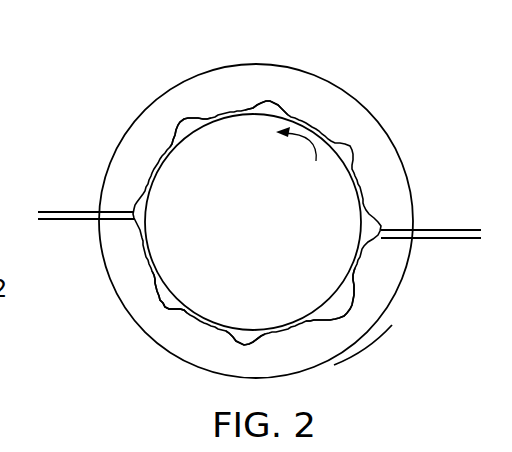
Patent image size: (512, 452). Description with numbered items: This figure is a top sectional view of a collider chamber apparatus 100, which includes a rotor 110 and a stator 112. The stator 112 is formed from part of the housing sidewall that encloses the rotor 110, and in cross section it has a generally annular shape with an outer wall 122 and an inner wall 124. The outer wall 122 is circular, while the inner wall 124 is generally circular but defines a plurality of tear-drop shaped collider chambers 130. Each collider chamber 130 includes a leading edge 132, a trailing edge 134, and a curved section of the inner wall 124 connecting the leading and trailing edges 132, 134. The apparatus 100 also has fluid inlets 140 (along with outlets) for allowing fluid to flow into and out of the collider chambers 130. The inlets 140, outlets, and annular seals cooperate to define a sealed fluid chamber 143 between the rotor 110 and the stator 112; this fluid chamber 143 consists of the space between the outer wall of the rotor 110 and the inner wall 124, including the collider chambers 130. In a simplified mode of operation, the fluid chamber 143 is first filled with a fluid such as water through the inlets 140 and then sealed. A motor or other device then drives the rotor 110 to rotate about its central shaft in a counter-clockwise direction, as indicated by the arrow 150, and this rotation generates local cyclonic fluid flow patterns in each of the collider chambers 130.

The collider chamber apparatus 100 is at (143, 362).
The rotor 110 is at (210, 326).
The stator 112 is at (364, 339).
The outer wall 122 is at (361, 107).
The inner wall 124 is at (309, 119).
The collider chambers 130 is at (253, 98).
The leading edge 132 is at (172, 290).
The trailing edge 134 is at (152, 282).
The fluid inlets 140 is at (58, 209).
The fluid chamber 143 is at (180, 130).
The arrow 150 is at (306, 147).